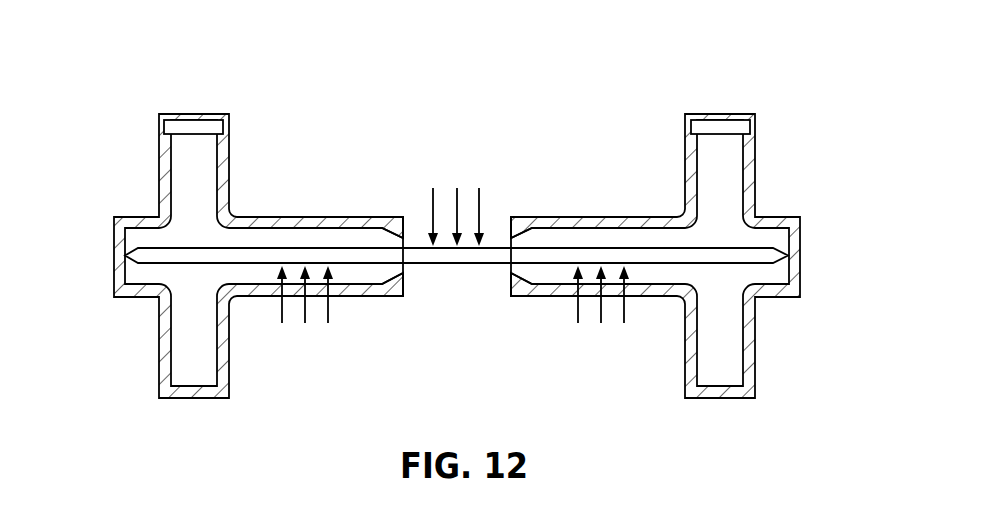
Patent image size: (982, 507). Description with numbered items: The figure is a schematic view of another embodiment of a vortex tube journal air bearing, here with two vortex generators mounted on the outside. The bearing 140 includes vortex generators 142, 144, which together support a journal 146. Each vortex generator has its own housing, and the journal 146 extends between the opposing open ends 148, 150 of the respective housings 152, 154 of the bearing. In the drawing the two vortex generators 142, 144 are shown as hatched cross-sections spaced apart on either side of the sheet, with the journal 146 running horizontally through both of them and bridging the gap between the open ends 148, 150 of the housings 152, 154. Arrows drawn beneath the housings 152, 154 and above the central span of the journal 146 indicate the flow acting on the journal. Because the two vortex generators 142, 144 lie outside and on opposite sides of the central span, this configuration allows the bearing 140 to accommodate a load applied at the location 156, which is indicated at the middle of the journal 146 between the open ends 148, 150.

The bearing 140 is at (150, 76).
The vortex generator 142 is at (228, 162).
The vortex generator 144 is at (757, 153).
The journal 146 is at (425, 265).
The open end 148 is at (404, 245).
The open end 150 is at (510, 245).
The housing 152 is at (280, 217).
The housing 154 is at (553, 215).
The location 156 is at (468, 194).